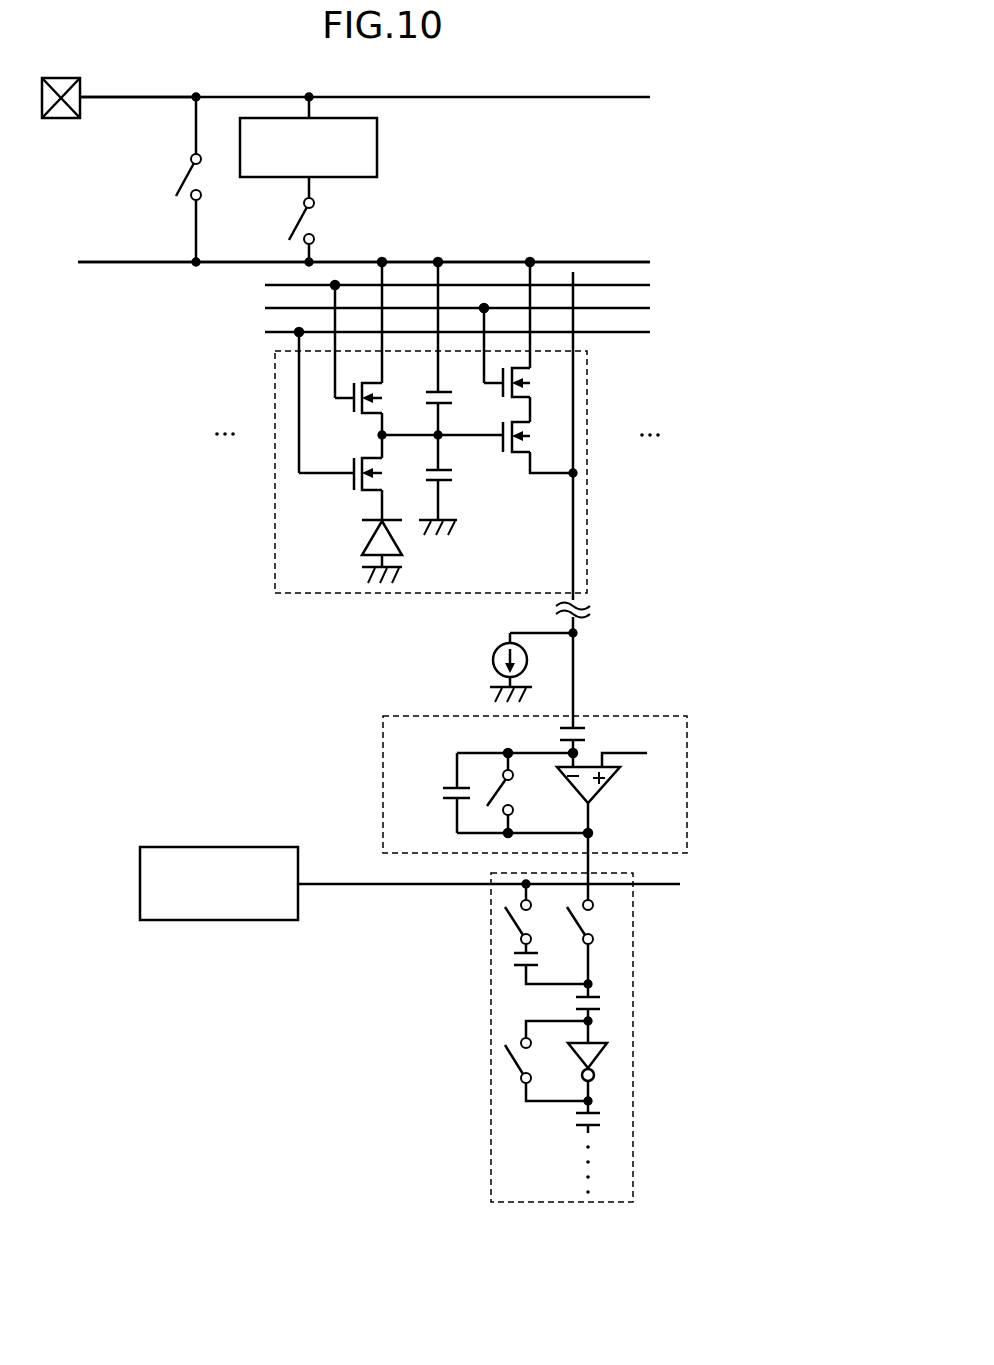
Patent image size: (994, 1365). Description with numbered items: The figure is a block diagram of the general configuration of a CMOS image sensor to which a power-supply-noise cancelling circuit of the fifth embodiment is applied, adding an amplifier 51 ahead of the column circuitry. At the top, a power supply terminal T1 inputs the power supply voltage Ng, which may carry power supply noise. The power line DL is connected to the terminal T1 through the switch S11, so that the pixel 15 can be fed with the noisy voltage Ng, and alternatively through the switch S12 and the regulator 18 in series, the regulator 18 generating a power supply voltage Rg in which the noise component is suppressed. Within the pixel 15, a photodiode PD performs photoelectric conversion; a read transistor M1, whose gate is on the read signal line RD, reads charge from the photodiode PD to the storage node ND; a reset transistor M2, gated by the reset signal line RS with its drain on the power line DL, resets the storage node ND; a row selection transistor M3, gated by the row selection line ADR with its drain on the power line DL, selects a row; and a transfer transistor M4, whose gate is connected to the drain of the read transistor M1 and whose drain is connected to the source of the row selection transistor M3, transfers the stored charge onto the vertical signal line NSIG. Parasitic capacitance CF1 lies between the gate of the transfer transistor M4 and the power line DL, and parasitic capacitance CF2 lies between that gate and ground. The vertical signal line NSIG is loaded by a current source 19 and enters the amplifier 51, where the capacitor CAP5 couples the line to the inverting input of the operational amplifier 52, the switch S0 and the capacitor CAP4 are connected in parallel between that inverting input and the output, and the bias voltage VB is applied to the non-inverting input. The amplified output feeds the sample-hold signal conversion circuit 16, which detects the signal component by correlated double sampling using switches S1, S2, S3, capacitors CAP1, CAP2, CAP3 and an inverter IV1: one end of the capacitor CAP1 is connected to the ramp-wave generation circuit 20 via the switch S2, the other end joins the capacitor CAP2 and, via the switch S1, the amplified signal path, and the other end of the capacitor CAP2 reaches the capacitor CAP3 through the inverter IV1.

The power supply terminal T1 is at (55, 118).
The power supply voltage Ng is at (118, 100).
The switch S11 is at (180, 175).
The regulator 18 is at (378, 148).
The power supply voltage Rg is at (315, 199).
The switch S12 is at (292, 214).
The power line DL is at (620, 263).
The reset signal line RS is at (640, 285).
The row selection line ADR is at (640, 308).
The read signal line RD is at (620, 334).
The pixel 15 is at (273, 555).
The read transistor M1 is at (384, 489).
The reset transistor M2 is at (384, 398).
The row selection transistor M3 is at (534, 395).
The transfer transistor M4 is at (540, 449).
The parasitic capacitance CF1 is at (448, 392).
The parasitic capacitance CF2 is at (450, 480).
The storage node ND is at (440, 433).
The photodiode PD is at (364, 540).
The vertical signal line NSIG is at (578, 622).
The current source 19 is at (492, 660).
The amplifier 51 is at (382, 748).
The capacitor CAP4 is at (578, 726).
The capacitor CAP5 is at (443, 786).
The switch S0 is at (500, 793).
The operational amplifier 52 is at (600, 795).
The bias voltage VB is at (638, 755).
The ramp-wave generation circuit 20 is at (255, 847).
The sample-hold signal conversion circuit 16 is at (490, 1120).
The switch S1 is at (580, 920).
The switch S2 is at (506, 927).
The switch S3 is at (506, 1066).
The capacitor CAP1 is at (520, 965).
The capacitor CAP2 is at (594, 996).
The capacitor CAP3 is at (594, 1110).
The inverter IV1 is at (600, 1058).